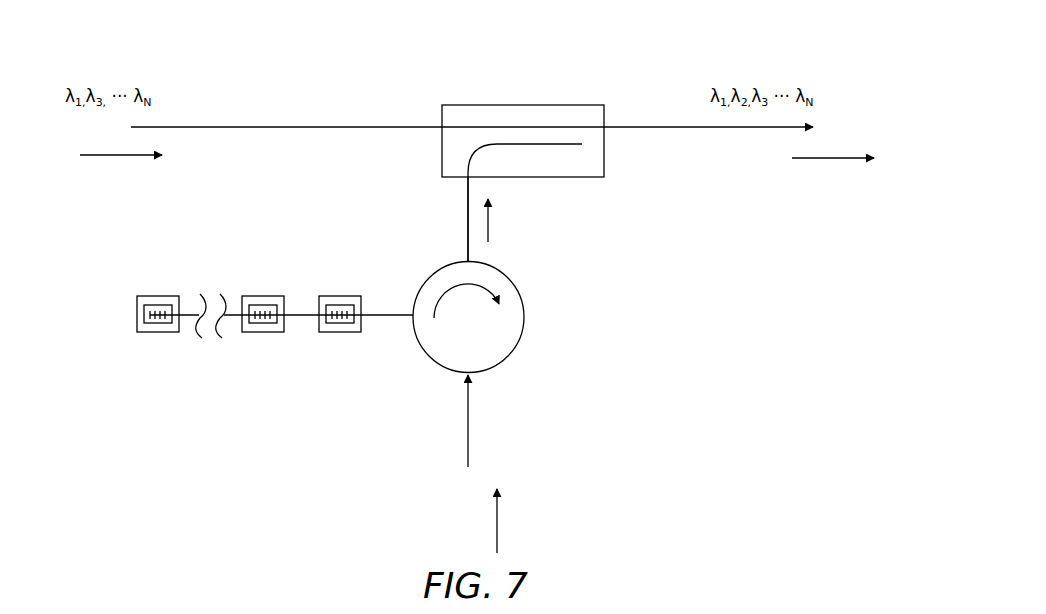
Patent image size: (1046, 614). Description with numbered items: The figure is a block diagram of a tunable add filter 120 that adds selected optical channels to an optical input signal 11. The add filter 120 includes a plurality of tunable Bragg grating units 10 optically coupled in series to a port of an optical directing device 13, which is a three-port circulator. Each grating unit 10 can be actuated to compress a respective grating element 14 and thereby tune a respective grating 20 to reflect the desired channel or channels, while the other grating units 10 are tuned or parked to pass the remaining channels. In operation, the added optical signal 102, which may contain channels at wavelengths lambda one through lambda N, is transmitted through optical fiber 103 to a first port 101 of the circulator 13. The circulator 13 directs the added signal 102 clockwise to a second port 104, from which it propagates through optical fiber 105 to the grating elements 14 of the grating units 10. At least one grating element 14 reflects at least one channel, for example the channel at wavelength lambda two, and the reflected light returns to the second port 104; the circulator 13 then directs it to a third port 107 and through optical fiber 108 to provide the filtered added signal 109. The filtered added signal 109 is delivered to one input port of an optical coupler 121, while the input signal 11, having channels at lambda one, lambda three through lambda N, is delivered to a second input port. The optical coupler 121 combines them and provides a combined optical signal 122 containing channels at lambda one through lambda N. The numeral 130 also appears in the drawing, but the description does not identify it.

The tunable Bragg grating unit 10 is at (160, 335).
The optical input signal 11 is at (118, 157).
The optical directing device 13 is at (524, 318).
The grating element 14 is at (330, 306).
The grating 20 is at (343, 320).
The first port 101 is at (476, 374).
The added optical signal 102 is at (499, 512).
The optical fiber 103 is at (468, 423).
The second port 104 is at (411, 313).
The optical fiber 105 is at (387, 318).
The third port 107 is at (466, 262).
The optical fiber 108 is at (466, 213).
The filtered added signal 109 is at (490, 227).
The tunable add filter 120 is at (577, 70).
The optical coupler 121 is at (500, 104).
The combined optical signal 122 is at (831, 160).
The controller 130 is at (650, 609).